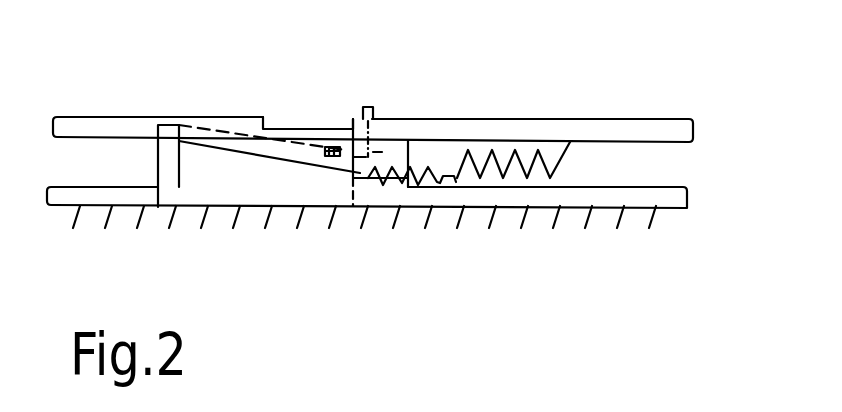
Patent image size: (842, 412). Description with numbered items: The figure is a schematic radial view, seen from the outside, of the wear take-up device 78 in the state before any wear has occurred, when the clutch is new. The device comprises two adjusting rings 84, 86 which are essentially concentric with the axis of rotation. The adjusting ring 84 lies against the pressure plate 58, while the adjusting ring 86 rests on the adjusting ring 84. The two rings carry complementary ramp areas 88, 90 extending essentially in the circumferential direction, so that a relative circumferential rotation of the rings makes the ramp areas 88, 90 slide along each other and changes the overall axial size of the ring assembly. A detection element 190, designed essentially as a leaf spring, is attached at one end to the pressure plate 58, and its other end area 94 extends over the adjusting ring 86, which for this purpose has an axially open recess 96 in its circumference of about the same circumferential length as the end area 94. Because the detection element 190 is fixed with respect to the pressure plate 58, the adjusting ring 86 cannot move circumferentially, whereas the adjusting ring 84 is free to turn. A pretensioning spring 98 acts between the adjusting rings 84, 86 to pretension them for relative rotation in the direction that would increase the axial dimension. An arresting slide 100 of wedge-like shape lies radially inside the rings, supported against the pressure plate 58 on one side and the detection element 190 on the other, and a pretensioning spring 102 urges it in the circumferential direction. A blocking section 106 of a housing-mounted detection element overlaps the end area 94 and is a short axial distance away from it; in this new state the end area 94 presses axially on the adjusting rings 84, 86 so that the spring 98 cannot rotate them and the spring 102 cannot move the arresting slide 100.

The wear take-up device 78 is at (110, 72).
The adjusting ring 86 is at (517, 120).
The end area of the detection element 94 is at (270, 127).
The adjusting ring 84 is at (597, 197).
The pressure plate 58 is at (692, 200).
The arresting slide 100 is at (157, 158).
The ramp area 88 is at (212, 172).
The detection element 190 is at (280, 127).
The recess 96 is at (350, 121).
The blocking section 106 is at (370, 117).
The ramp area 90 is at (393, 153).
The pretensioning spring 102 is at (425, 178).
The pretensioning spring 98 is at (510, 184).